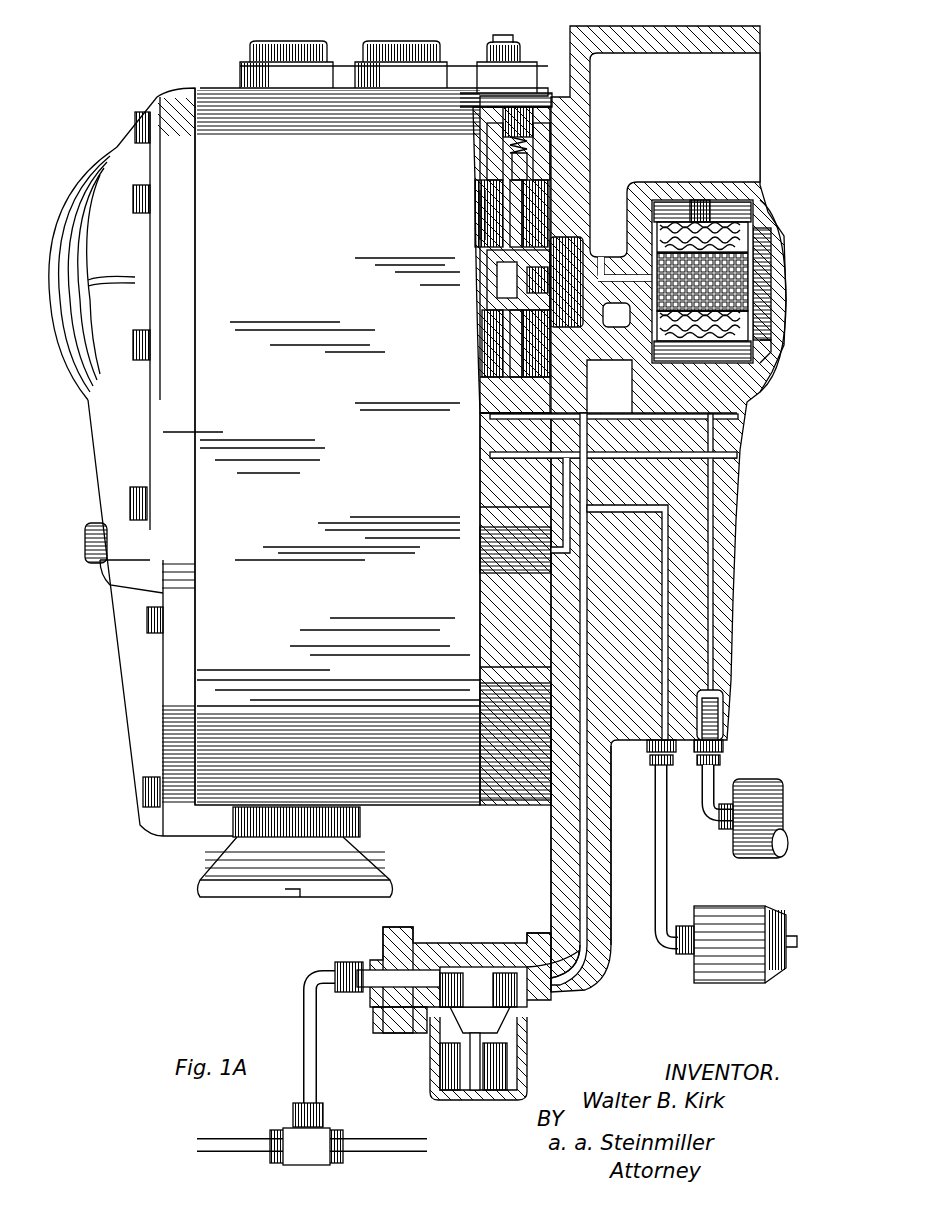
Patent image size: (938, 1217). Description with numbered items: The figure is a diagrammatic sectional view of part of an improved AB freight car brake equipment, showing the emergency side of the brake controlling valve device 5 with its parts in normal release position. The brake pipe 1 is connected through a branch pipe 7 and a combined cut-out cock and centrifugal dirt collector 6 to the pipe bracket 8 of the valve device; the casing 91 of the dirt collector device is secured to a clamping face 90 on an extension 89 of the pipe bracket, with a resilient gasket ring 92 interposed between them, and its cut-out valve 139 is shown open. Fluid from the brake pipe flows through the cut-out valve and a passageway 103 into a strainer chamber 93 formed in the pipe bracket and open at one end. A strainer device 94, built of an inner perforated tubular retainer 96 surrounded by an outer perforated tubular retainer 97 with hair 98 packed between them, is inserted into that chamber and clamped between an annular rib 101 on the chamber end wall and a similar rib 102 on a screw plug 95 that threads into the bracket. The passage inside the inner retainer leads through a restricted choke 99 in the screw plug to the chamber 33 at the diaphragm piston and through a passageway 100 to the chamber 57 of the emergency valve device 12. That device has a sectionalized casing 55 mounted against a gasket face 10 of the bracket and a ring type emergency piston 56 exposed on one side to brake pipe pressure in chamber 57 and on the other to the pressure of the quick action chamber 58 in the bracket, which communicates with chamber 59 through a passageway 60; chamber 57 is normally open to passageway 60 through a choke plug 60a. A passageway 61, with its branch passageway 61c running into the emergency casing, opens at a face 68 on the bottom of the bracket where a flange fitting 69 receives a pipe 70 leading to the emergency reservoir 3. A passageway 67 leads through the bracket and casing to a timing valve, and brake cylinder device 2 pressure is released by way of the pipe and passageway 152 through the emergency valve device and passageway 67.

The brake pipe 1 is at (250, 1142).
The brake cylinder device 2 is at (748, 905).
The emergency reservoir 3 is at (757, 782).
The brake controlling valve device 5 is at (212, 84).
The combined cut-out cock and centrifugal dirt collector 6 is at (425, 1067).
The branch pipe 7 is at (303, 1012).
The pipe bracket 8 is at (567, 77).
The gasket face 10 is at (553, 103).
The emergency valve device 12 is at (74, 188).
The chamber 33 is at (770, 250).
The sectionalized casing 55 is at (503, 110).
The emergency piston 56 is at (550, 232).
The chamber 57 is at (548, 192).
The quick action chamber 58 is at (692, 96).
The chamber 59 is at (480, 198).
The passageway 60 is at (500, 128).
The choke plug 60a is at (512, 150).
The passageway 61 is at (738, 418).
The branch passageway 61c is at (540, 422).
The passageway 67 is at (737, 456).
The face 68 is at (648, 752).
The flange fitting 69 is at (725, 750).
The pipe 70 is at (702, 818).
The extension 89 is at (560, 858).
The clamping face 90 is at (551, 935).
The casing 91 is at (518, 1022).
The resilient gasket ring 92 is at (548, 940).
The chamber 93 is at (672, 210).
The strainer device 94 is at (700, 250).
The screw plug 95 is at (771, 275).
The perforated tubular retainer 96 is at (748, 315).
The perforated tubular retainer 97 is at (700, 350).
The hair 98 is at (727, 222).
The choke 99 is at (748, 290).
The passageway 100 is at (603, 272).
The annular rib 101 is at (652, 335).
The rib 102 is at (751, 356).
The passageway 103 is at (562, 838).
The cut-out valve 139 is at (432, 947).
The pipe and passageway 152 is at (662, 520).